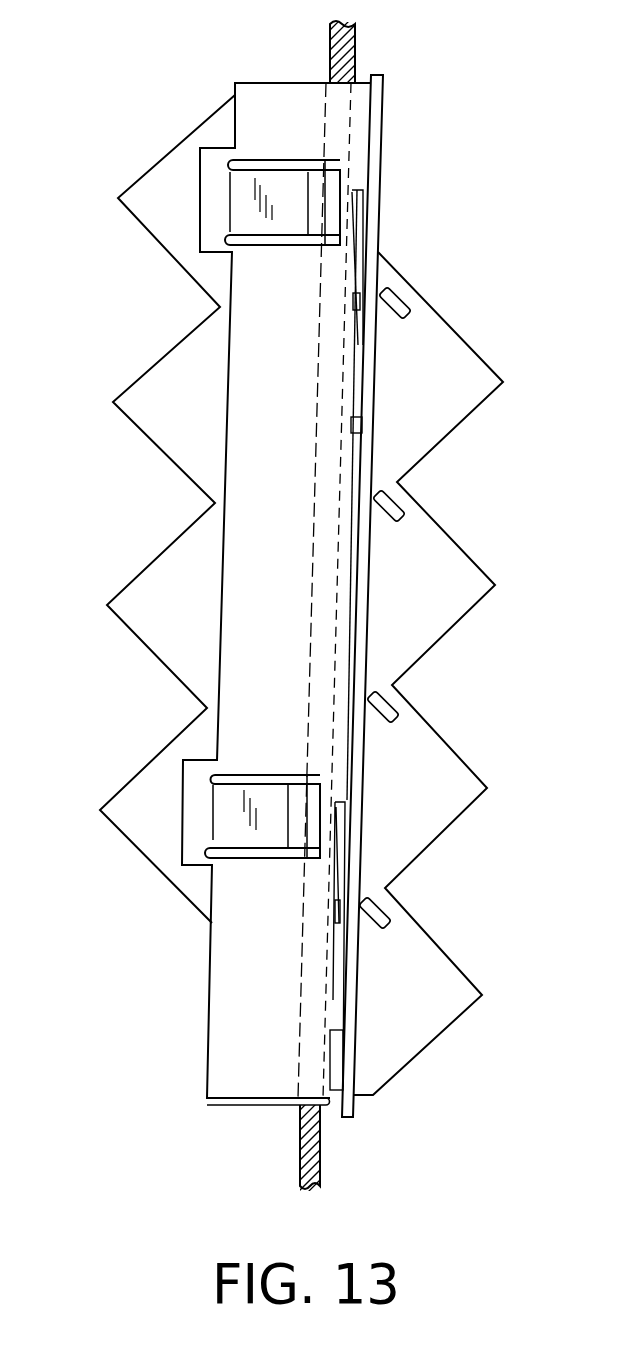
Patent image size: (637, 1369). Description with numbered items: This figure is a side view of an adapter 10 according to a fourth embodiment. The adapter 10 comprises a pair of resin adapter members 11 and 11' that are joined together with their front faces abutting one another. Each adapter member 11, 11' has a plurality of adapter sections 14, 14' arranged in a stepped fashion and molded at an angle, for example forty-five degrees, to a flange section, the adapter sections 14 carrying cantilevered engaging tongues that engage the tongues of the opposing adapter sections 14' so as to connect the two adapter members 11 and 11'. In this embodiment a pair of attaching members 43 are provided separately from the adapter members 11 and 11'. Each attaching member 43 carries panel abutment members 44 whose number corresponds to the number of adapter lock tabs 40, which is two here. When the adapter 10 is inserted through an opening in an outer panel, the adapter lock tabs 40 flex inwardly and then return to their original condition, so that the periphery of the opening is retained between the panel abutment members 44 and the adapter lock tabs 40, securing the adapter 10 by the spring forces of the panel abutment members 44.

The adapter 10 is at (400, 228).
The adapter member 11 is at (444, 666).
The adapter member 11' is at (136, 520).
The adapter section 14 is at (444, 673).
The adapter section 14' is at (150, 520).
The adapter lock tab 40 is at (268, 197).
The attaching member 43 is at (208, 960).
The panel abutment member 44 is at (360, 335).